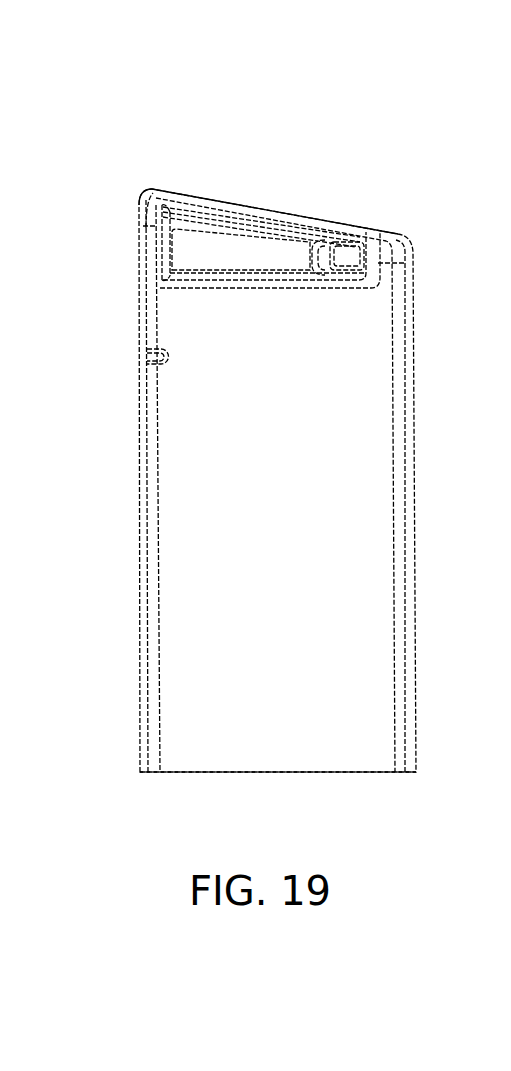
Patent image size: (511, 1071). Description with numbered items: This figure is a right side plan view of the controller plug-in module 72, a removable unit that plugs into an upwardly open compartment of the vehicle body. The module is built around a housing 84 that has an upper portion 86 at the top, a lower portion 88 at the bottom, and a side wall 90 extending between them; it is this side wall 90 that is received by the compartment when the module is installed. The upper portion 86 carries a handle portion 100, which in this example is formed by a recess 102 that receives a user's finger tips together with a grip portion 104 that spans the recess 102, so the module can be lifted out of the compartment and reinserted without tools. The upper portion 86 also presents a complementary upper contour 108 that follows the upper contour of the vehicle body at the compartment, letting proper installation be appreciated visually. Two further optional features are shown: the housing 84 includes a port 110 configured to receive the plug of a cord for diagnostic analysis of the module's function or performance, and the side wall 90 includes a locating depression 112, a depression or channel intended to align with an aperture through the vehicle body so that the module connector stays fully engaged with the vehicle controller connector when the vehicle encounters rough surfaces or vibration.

The controller plug-in module 72 is at (407, 146).
The housing 84 is at (150, 779).
The upper portion 86 is at (152, 259).
The lower portion 88 is at (178, 745).
The side wall 90 is at (172, 498).
The handle portion 100 is at (283, 197).
The recess 102 is at (201, 263).
The grip portion 104 is at (232, 201).
The complementary upper contour 108 is at (122, 202).
The port 110 is at (350, 255).
The locating depression 112 is at (141, 358).